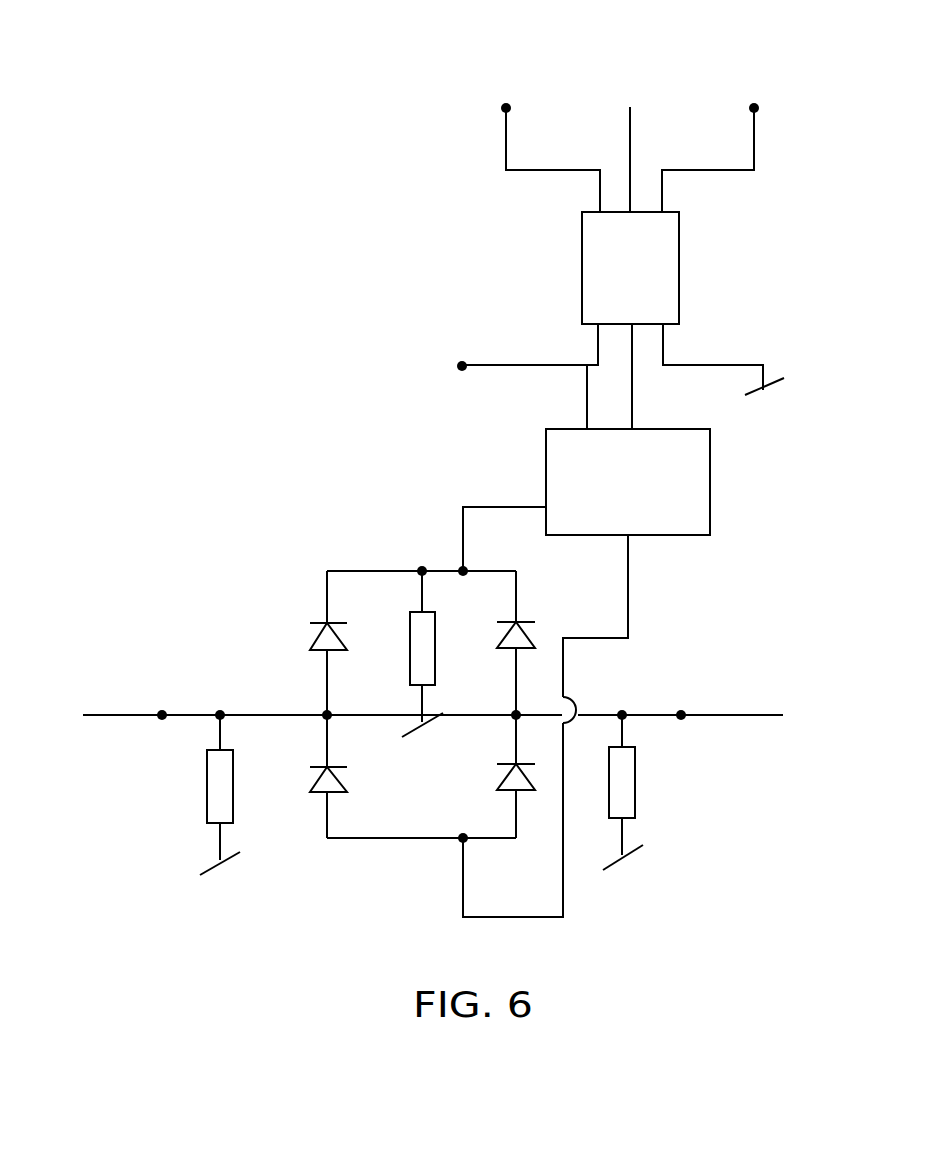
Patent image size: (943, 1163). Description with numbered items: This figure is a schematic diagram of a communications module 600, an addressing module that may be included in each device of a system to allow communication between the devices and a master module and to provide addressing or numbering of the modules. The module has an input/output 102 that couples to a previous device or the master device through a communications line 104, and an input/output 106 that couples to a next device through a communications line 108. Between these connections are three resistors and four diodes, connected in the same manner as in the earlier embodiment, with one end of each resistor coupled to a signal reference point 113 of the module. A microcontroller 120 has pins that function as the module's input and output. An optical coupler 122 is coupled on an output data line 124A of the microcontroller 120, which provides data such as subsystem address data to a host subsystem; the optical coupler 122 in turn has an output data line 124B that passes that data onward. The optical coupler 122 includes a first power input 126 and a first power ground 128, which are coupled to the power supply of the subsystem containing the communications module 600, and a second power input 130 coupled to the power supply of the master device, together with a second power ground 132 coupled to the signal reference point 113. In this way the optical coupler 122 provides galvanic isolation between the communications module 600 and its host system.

The communications module 600 is at (366, 474).
The input/output 102 is at (160, 710).
The communications line 104 is at (133, 713).
The input/output 106 is at (681, 708).
The communications line 108 is at (730, 710).
The signal reference point 113 is at (213, 868).
The microcontroller 120 is at (710, 462).
The optical coupler 122 is at (652, 279).
The output data line 124A is at (632, 393).
The output data line 124B is at (632, 127).
The first power input 126 is at (662, 182).
The first power ground 128 is at (600, 190).
The second power input 130 is at (598, 324).
The second power ground 132 is at (663, 324).